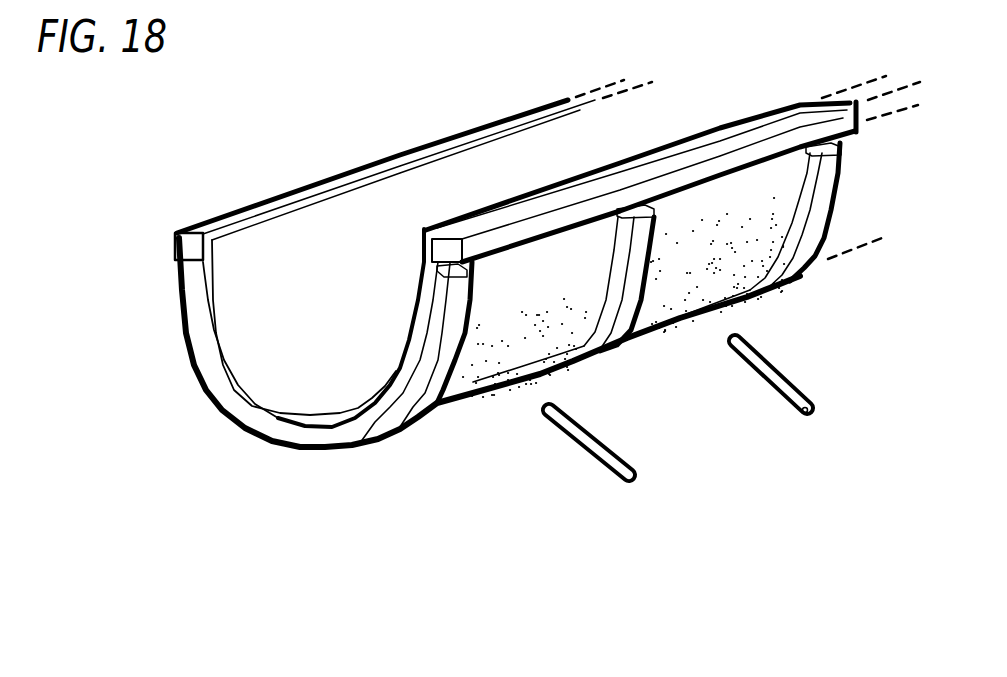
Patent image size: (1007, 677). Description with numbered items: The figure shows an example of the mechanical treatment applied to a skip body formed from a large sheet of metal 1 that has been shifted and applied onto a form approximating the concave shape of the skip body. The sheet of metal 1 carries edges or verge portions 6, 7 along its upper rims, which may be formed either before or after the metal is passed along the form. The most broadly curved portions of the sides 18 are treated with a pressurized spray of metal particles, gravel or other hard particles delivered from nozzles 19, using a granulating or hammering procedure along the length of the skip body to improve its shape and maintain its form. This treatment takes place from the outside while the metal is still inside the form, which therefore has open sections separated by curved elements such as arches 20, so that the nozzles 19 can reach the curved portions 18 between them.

The sheet of metal 1 is at (262, 382).
The edge or verge portion 6 is at (176, 250).
The edge or verge portion 7 is at (774, 148).
The most broadly curved portions of the sides 18 is at (478, 369).
The nozzles 19 is at (605, 496).
The arches 20 is at (385, 424).